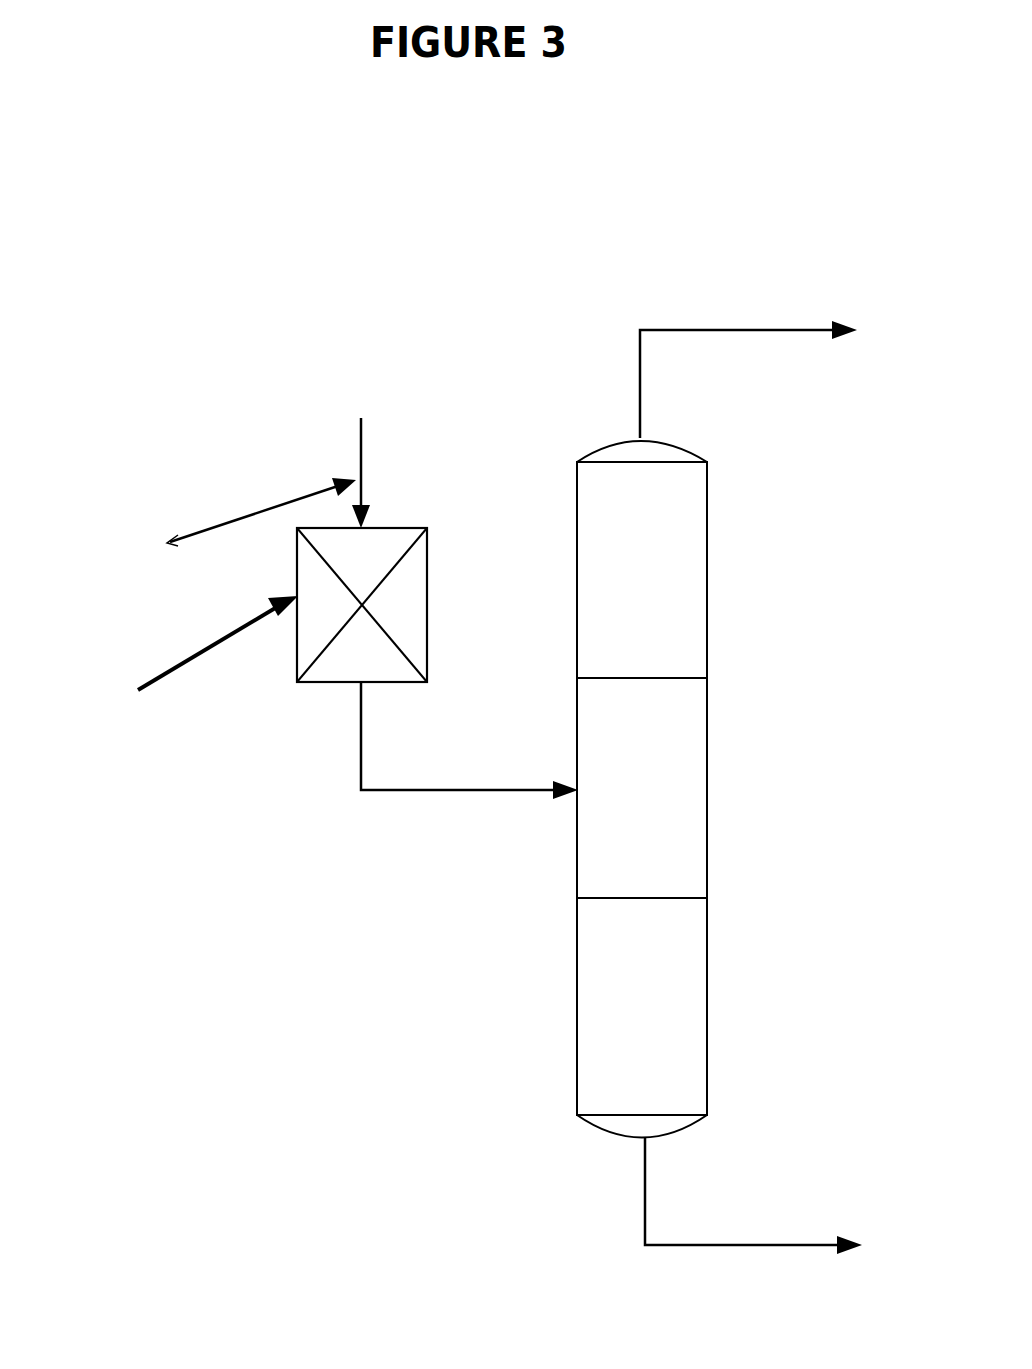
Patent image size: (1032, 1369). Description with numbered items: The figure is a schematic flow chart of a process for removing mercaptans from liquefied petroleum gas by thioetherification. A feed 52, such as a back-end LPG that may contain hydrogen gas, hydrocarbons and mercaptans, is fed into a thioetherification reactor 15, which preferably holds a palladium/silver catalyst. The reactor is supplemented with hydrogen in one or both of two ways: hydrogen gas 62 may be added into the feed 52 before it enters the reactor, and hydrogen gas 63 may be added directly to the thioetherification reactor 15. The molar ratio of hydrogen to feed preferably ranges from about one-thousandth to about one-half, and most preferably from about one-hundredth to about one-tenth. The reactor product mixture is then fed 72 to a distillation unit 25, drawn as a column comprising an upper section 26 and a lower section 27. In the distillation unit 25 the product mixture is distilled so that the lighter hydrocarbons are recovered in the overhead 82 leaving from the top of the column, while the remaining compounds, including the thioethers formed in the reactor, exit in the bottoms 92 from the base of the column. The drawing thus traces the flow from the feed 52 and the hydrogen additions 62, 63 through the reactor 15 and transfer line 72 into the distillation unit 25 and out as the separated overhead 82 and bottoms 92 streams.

The thioetherification reactor 15 is at (388, 605).
The distillation unit 25 is at (671, 789).
The upper section 26 is at (642, 572).
The lower section 27 is at (642, 1004).
The feed 52 is at (335, 464).
The hydrogen gas 62 is at (233, 523).
The hydrogen gas 63 is at (183, 675).
The reactor product mixture feed 72 is at (439, 747).
The overhead 82 is at (748, 349).
The bottoms 92 is at (753, 1228).